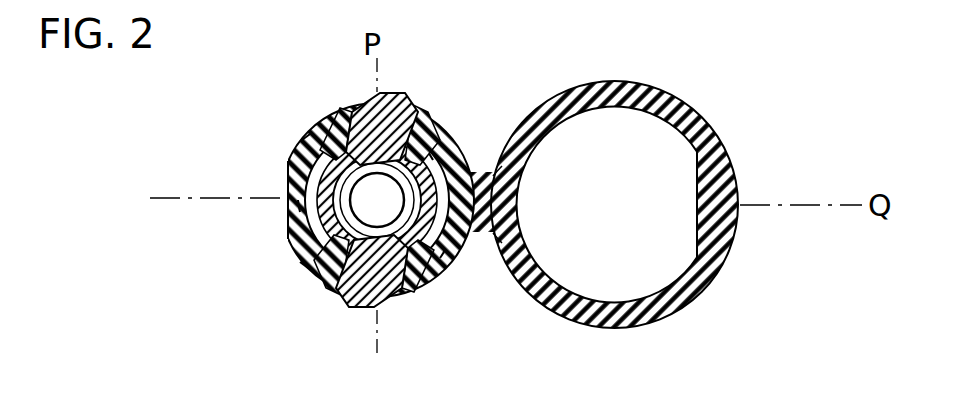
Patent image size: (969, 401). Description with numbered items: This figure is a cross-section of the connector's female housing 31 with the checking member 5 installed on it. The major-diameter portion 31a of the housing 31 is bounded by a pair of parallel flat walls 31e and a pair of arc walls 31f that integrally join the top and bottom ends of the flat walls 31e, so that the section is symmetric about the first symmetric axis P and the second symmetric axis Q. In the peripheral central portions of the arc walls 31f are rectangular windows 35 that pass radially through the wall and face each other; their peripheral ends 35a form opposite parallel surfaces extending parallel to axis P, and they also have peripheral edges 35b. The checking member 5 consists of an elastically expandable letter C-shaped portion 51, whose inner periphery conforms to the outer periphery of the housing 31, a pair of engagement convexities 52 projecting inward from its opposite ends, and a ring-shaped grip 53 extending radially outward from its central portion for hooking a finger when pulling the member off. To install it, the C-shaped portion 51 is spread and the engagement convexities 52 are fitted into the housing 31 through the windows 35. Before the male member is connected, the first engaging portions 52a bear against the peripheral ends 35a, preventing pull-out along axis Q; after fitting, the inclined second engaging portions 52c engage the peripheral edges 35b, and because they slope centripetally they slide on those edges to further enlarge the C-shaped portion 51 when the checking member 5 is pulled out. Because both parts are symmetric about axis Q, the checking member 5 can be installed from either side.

The checking member 5 is at (660, 58).
The ring-shaped grip 53 is at (683, 108).
The housing 31 is at (284, 251).
The major-diameter portion 31a is at (292, 150).
The flat wall 31e is at (296, 210).
The arc wall 31f is at (304, 138).
The window 35 is at (356, 130).
The peripheral end 35a is at (340, 112).
The peripheral edge 35b is at (330, 128).
The letter C-shaped portion 51 is at (452, 134).
The engagement convexity 52 is at (412, 108).
The first engaging portion 52a is at (440, 124).
The inclined second engaging portion 52c is at (426, 282).